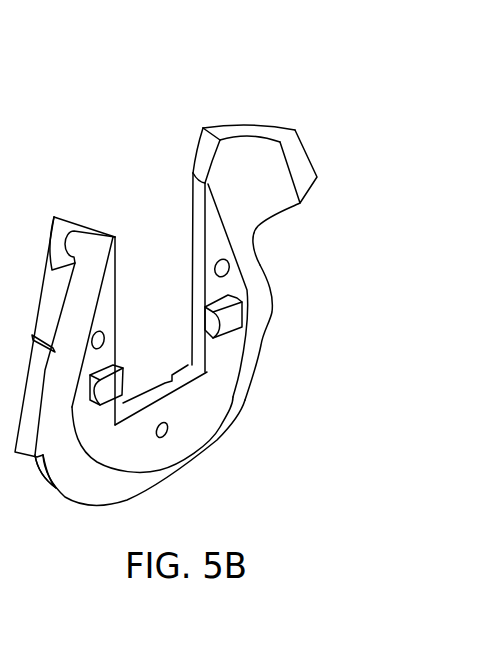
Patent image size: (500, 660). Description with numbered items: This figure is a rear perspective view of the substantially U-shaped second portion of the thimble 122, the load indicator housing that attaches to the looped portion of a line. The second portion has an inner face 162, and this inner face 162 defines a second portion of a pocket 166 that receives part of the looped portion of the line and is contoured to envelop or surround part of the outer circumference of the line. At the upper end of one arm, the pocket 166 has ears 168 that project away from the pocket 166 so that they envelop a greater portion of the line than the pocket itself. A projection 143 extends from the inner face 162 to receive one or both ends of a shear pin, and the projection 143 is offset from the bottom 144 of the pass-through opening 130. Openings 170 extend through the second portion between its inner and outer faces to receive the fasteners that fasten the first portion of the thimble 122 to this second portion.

The thimble 122 is at (306, 104).
The pass-through opening 130 is at (160, 208).
The projection 143 is at (56, 488).
The bottom of the pass-through opening 144 is at (160, 392).
The inner face 162 is at (213, 394).
The pocket 166 is at (284, 221).
The ears 168 is at (299, 157).
The openings 170 is at (215, 267).